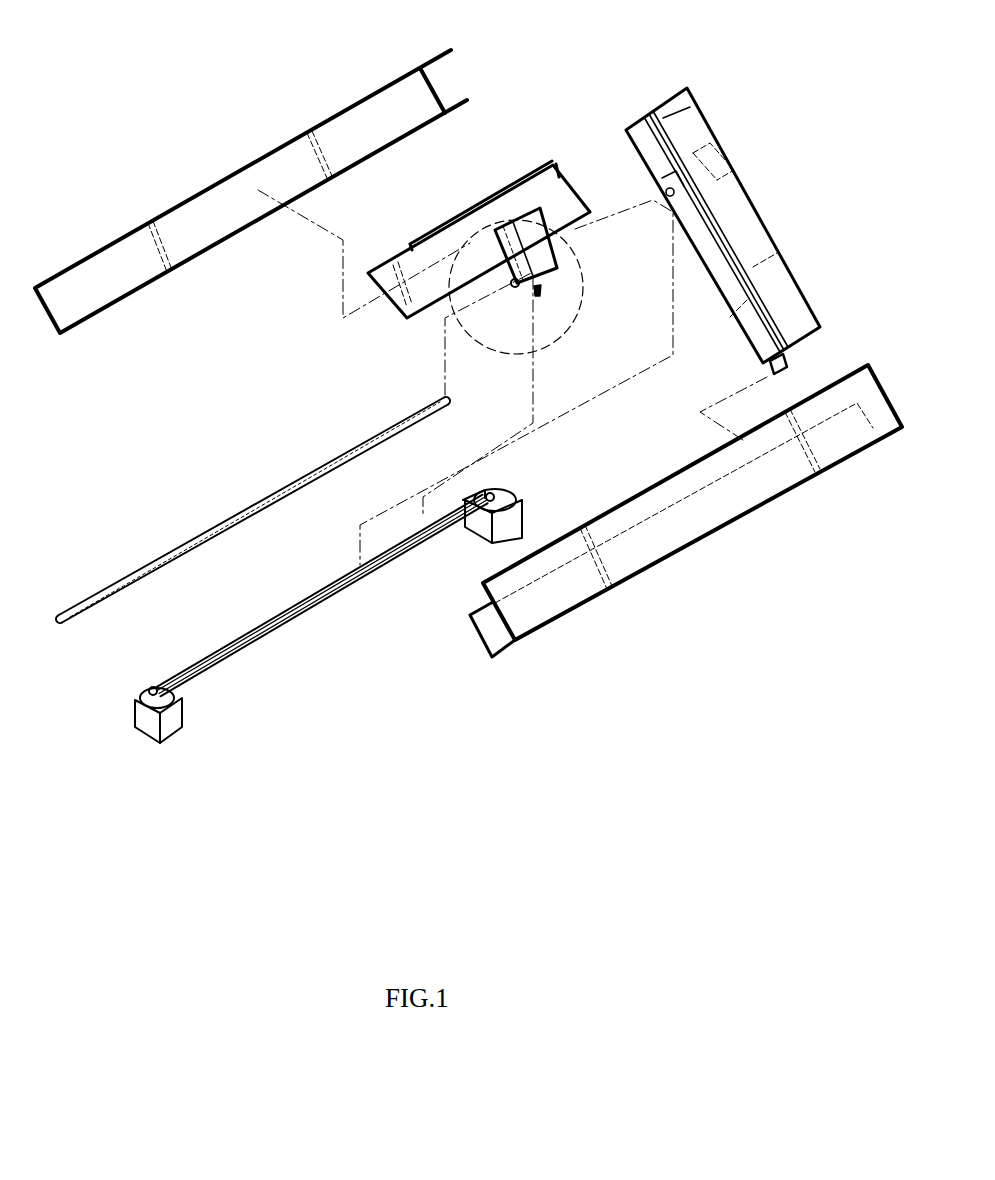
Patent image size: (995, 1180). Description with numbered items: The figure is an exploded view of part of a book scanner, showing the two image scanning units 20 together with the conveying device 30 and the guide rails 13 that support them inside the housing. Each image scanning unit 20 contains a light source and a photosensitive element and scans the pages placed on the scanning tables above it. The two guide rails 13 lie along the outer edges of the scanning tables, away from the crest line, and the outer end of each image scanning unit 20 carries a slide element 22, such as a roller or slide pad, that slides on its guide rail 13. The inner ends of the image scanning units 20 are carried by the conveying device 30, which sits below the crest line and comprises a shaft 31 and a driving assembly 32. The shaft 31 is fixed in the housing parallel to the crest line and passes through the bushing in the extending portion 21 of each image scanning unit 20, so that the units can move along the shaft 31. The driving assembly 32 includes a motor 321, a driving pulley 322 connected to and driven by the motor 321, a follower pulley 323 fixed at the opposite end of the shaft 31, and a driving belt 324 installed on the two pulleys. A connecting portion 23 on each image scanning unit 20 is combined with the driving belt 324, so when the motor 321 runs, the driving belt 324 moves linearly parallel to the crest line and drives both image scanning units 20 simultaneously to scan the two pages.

The guide rail 13 is at (185, 227).
The image scanning unit 20 is at (528, 190).
The extending portion 21 is at (512, 270).
The slide element 22 is at (783, 370).
The connecting portion 23 is at (547, 277).
The conveying device 30 is at (288, 613).
The shaft 31 is at (128, 575).
The driving assembly 32 is at (328, 659).
The motor 321 is at (477, 540).
The driving pulley 322 is at (467, 527).
The follower pulley 323 is at (177, 688).
The driving belt 324 is at (302, 618).